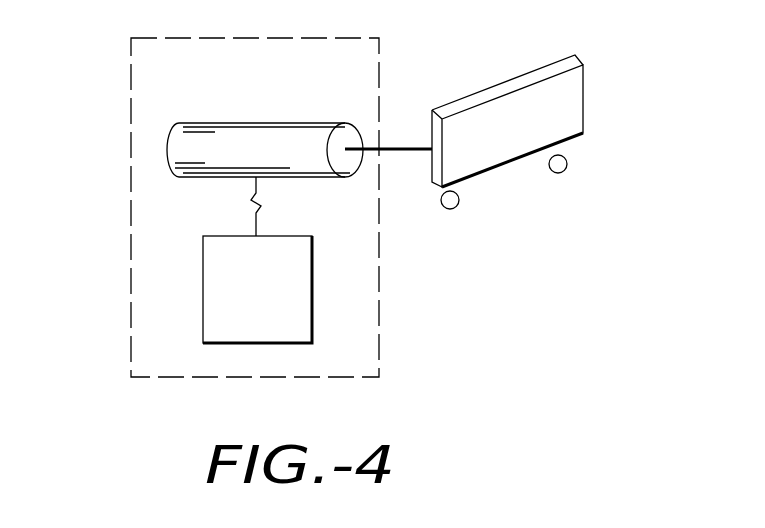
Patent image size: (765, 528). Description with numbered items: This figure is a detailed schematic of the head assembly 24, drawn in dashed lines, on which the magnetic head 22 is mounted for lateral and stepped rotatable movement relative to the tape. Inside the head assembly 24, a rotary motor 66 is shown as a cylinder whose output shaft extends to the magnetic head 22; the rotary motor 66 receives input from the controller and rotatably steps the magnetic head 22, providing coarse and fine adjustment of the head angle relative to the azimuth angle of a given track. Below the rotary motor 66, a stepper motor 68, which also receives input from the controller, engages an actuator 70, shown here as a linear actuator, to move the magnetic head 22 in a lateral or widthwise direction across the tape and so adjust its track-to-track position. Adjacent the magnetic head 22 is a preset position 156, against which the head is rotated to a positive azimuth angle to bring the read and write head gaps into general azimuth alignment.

The magnetic head 22 is at (583, 92).
The head assembly 24 is at (131, 278).
The rotary motor 66 is at (216, 122).
The stepper motor 68 is at (312, 303).
The actuator 70 is at (259, 205).
The preset position 156 is at (558, 173).